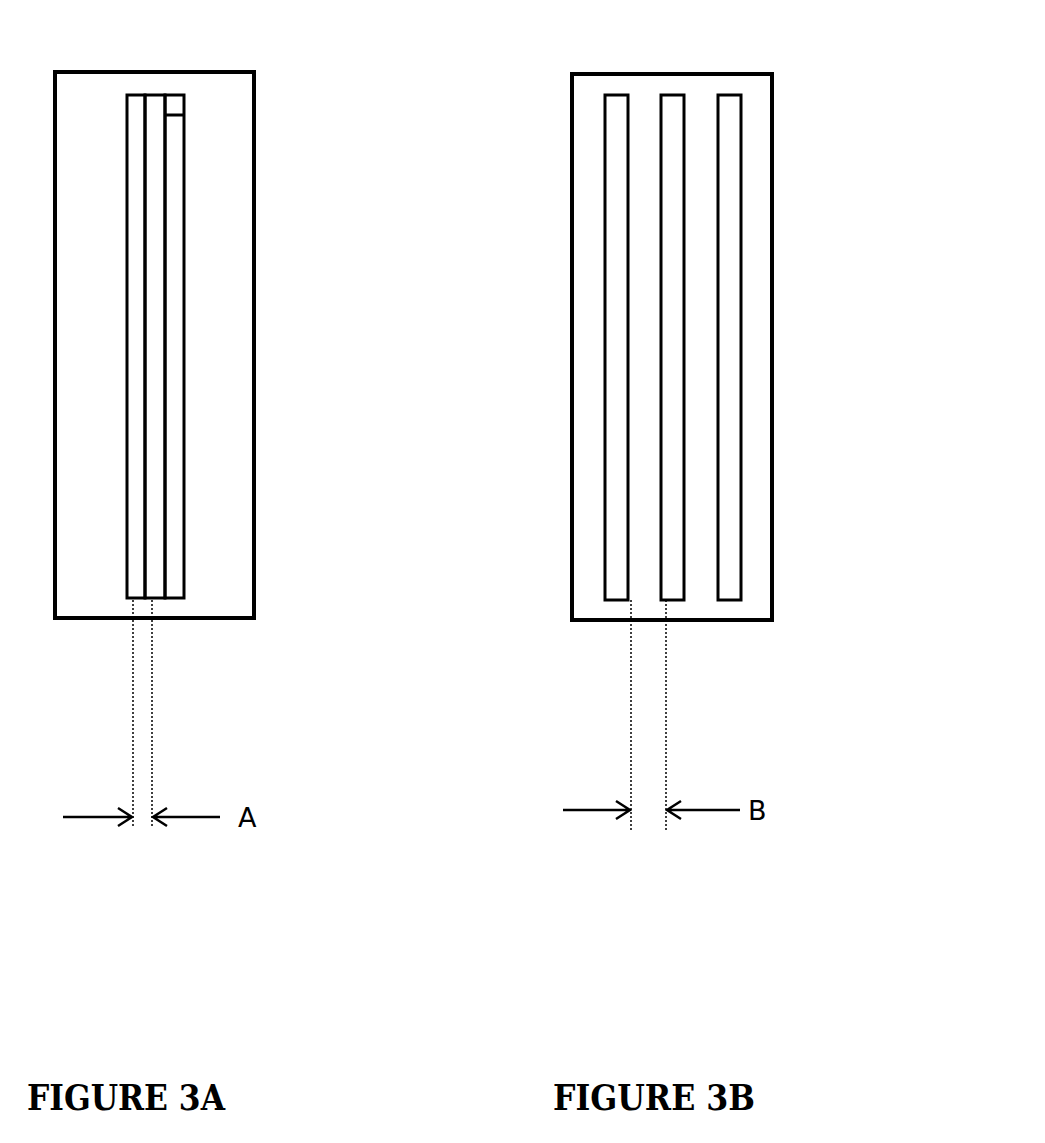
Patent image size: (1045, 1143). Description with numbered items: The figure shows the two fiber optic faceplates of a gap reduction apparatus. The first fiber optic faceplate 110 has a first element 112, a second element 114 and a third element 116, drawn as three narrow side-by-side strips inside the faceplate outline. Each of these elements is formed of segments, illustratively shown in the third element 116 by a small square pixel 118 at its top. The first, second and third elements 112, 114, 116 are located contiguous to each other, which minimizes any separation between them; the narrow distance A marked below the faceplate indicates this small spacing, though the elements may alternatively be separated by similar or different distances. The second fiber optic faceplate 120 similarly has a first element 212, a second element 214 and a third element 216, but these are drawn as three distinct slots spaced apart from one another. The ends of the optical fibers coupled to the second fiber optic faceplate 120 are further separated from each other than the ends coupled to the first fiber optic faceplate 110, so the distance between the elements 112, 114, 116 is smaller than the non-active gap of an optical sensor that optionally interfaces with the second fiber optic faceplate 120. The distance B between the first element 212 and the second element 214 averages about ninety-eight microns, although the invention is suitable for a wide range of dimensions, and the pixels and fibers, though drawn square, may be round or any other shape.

In FIG. 3A, the first fiber optic faceplate 110 is at (80, 72).
In FIG. 3A, the first element 112 is at (137, 355).
In FIG. 3A, the second element 114 is at (152, 287).
In FIG. 3A, the third element 116 is at (177, 203).
In FIG. 3A, the pixel 118 is at (185, 107).
In FIG. 3B, the second fiber optic faceplate 120 is at (772, 113).
In FIG. 3B, the first element 212 is at (610, 427).
In FIG. 3B, the second element 214 is at (672, 593).
In FIG. 3B, the third element 216 is at (728, 472).